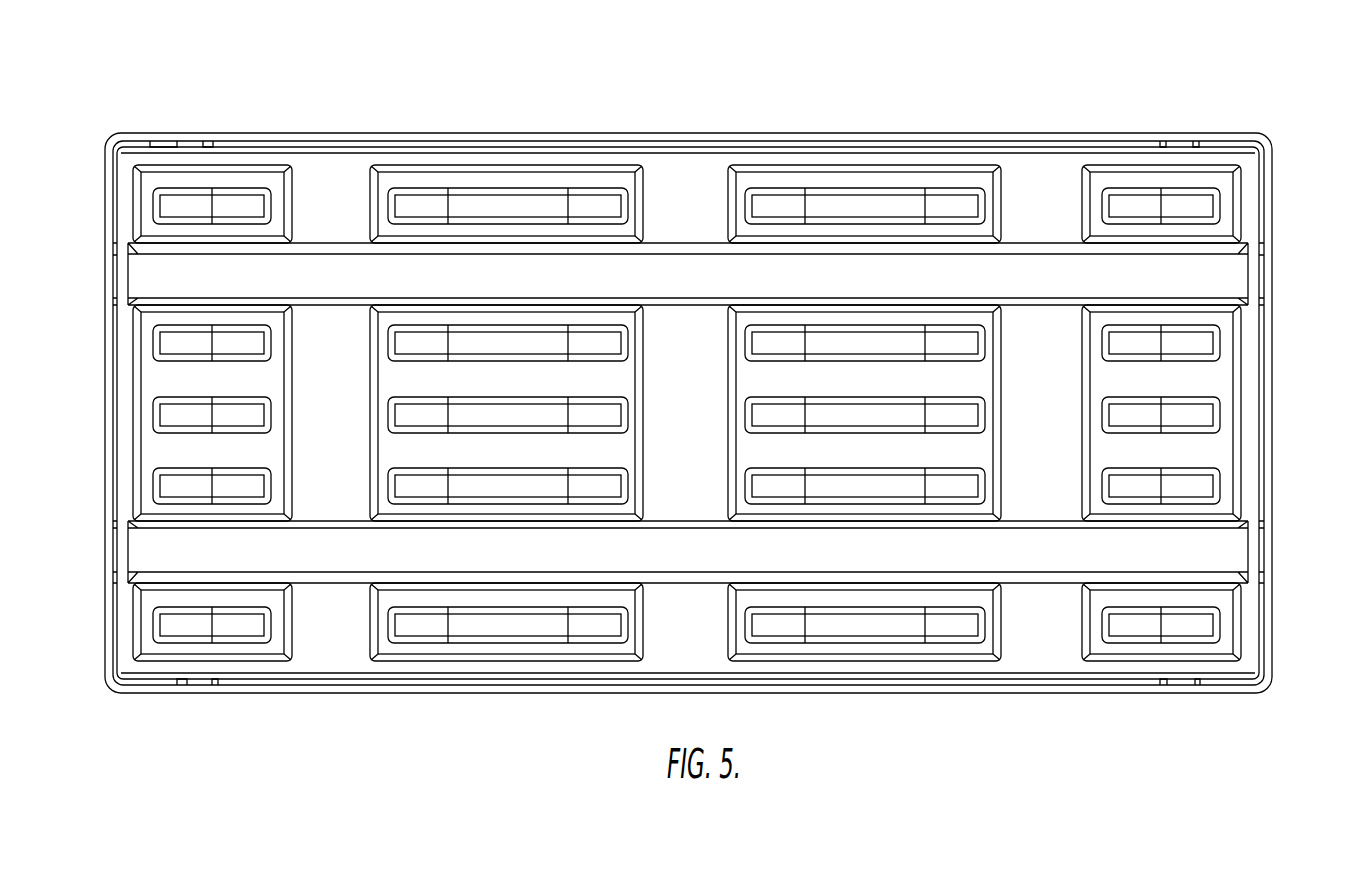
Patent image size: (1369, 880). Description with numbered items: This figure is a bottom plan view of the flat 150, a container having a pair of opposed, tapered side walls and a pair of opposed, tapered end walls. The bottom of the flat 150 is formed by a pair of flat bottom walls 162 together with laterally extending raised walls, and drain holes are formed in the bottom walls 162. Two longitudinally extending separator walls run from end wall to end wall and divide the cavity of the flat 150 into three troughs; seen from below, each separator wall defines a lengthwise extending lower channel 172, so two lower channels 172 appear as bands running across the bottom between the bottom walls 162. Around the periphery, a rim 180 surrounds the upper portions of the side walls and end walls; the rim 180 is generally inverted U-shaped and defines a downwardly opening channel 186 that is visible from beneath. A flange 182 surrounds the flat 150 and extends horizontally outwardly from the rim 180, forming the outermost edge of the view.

The flat 150 is at (958, 82).
The rim 180 is at (548, 132).
The flange 182 is at (726, 139).
The downwardly opening channel 186 is at (849, 146).
The bottom wall 162 is at (954, 176).
The lower channel 172 is at (1206, 275).